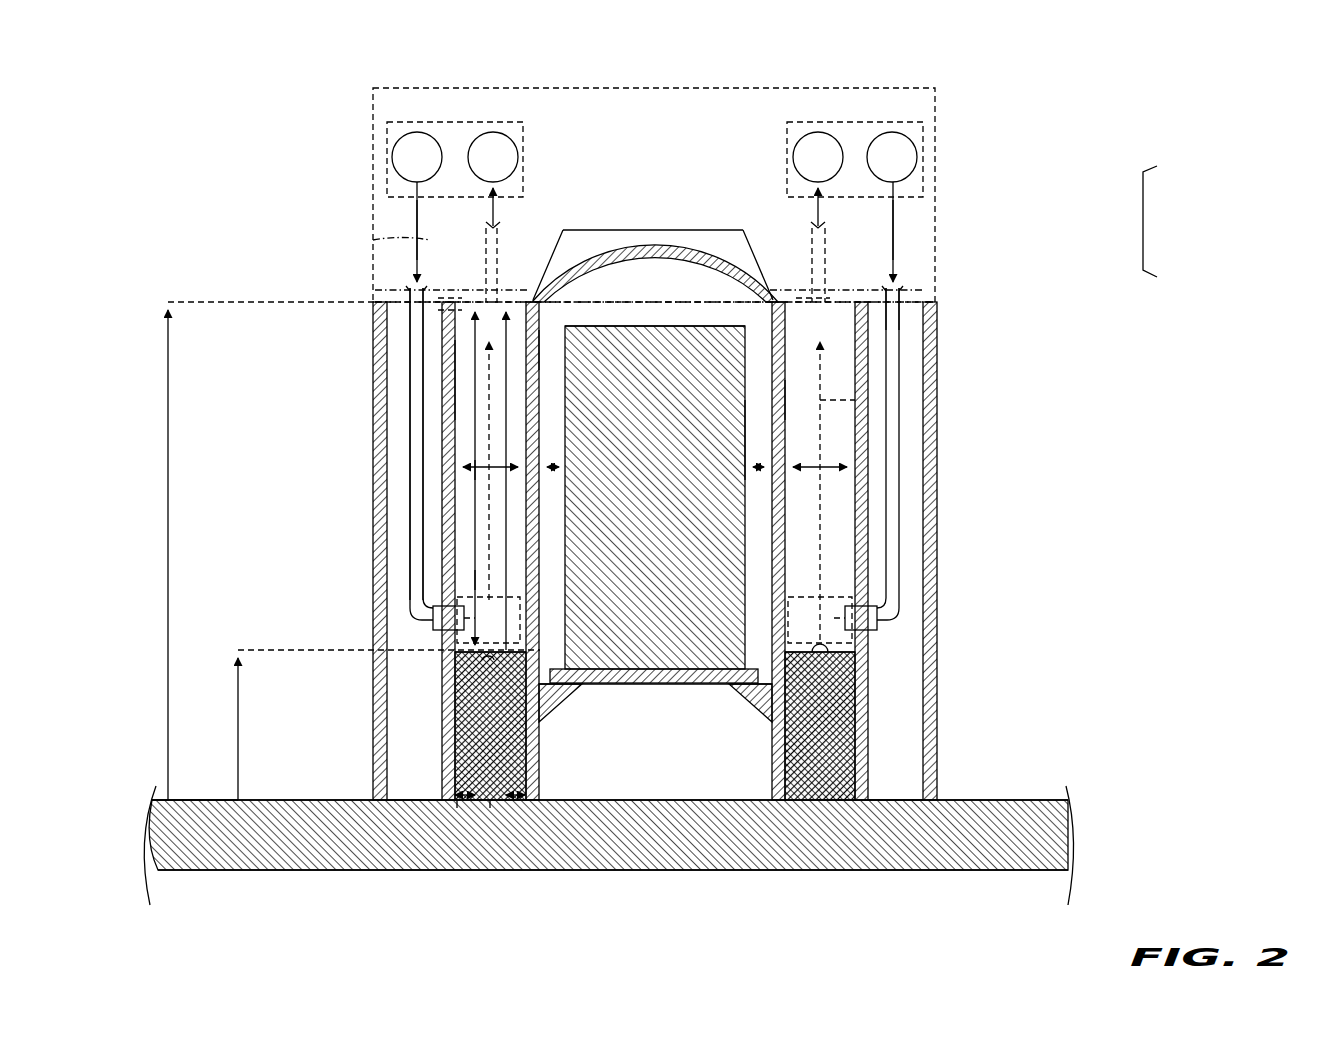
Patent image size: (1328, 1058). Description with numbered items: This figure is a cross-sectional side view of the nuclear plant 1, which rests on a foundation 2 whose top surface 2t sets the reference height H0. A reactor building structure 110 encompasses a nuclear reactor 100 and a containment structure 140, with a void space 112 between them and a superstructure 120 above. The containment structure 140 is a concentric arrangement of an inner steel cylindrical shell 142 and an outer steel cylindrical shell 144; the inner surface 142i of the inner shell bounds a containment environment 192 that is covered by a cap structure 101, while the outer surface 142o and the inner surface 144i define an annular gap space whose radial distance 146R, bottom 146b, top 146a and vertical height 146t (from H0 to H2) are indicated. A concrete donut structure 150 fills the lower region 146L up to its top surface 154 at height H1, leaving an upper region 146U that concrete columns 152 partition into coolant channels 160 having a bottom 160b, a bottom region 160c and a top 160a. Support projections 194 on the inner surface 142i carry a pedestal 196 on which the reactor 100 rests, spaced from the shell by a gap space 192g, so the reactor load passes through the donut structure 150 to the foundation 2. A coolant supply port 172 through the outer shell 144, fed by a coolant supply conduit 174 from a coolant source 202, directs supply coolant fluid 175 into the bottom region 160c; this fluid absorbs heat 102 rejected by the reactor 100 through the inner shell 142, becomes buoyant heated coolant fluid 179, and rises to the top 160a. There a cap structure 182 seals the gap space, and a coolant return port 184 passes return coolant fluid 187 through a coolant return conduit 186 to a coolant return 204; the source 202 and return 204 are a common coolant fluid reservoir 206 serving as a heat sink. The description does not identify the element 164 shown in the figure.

The nuclear plant 1 is at (1030, 428).
The foundation 2 is at (975, 822).
The top surface of the foundation 2t is at (489, 806).
The nuclear reactor 100 is at (655, 497).
The cap structure 101 is at (696, 258).
The heat 102 is at (492, 435).
The reactor building structure 110 is at (380, 560).
The void space 112 is at (655, 752).
The superstructure 120 is at (373, 240).
The containment structure 140 is at (1143, 222).
The inner steel cylindrical shell 142 is at (528, 300).
The inner surface of the inner steel cylindrical shell 142i is at (788, 390).
The outer surface of the inner steel cylindrical shell 142o is at (548, 356).
The outer steel cylindrical shell 144 is at (450, 692).
The inner surface of the outer steel cylindrical shell 144i is at (457, 370).
The top of the annular gap space 146a is at (440, 315).
The bottom of the annular gap space 146b is at (455, 792).
The lower region of the annular gap space 146L is at (462, 806).
The radial distance of the annular gap space 146R is at (475, 477).
The vertical height of the annular gap space 146t is at (508, 806).
The upper region of the annular gap space 146U is at (472, 582).
The concrete donut structure 150 is at (455, 736).
The concrete columns 152 is at (1164, 223).
The top surface of the concrete donut structure 154 is at (455, 662).
The coolant channels 160 is at (332, 276).
The top of the coolant channel 160a is at (654, 309).
The bottom of the coolant channel 160b is at (550, 653).
The bottom region of the coolant channel 160c is at (522, 600).
The tube segment 164 is at (406, 298).
The coolant supply port 172 is at (440, 627).
The coolant supply conduit 174 is at (408, 460).
The supply coolant fluid 175 is at (416, 232).
The heated coolant fluid 179 is at (490, 516).
The cap structure 182 is at (402, 282).
The coolant return port 184 is at (500, 292).
The coolant return conduit 186 is at (456, 282).
The return coolant fluid 187 is at (500, 216).
The containment environment 192 is at (603, 230).
The gap space 192g is at (756, 482).
The support projections 194 is at (563, 714).
The pedestal 196 is at (633, 686).
The coolant source 202 is at (654, 157).
The coolant return 204 is at (655, 157).
The coolant fluid reservoir 206 is at (418, 122).
The height of the top surface of the foundation H0 is at (160, 785).
The height of the concrete donut top surface H1 is at (238, 718).
The height of the annular gap space top H2 is at (170, 330).